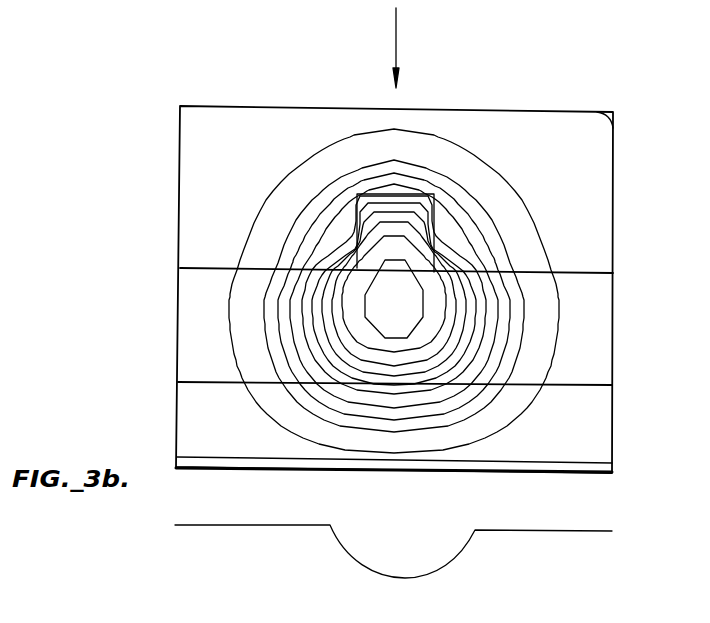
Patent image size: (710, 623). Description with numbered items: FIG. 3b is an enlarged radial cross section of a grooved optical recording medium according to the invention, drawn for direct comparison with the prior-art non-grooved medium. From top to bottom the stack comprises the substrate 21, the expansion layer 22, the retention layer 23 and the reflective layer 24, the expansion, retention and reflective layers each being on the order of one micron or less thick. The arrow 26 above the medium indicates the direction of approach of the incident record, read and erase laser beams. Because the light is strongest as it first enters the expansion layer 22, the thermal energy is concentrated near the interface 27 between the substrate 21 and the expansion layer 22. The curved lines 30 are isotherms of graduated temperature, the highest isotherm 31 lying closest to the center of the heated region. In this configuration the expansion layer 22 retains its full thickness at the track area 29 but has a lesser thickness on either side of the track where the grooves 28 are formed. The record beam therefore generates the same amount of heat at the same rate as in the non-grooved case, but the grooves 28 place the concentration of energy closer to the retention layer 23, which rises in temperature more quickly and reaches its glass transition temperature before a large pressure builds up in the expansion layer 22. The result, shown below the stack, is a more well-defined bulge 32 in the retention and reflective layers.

The substrate 21 is at (587, 162).
The expansion layer 22 is at (597, 322).
The retention layer 23 is at (590, 430).
The reflective layer 24 is at (604, 468).
The arrow 26 is at (396, 29).
The interface 27 is at (586, 273).
The grooves 28 is at (338, 257).
The track area 29 is at (412, 192).
The curved lines 30 is at (545, 253).
The highest isotherm 31 is at (423, 312).
The bulge 32 is at (411, 547).